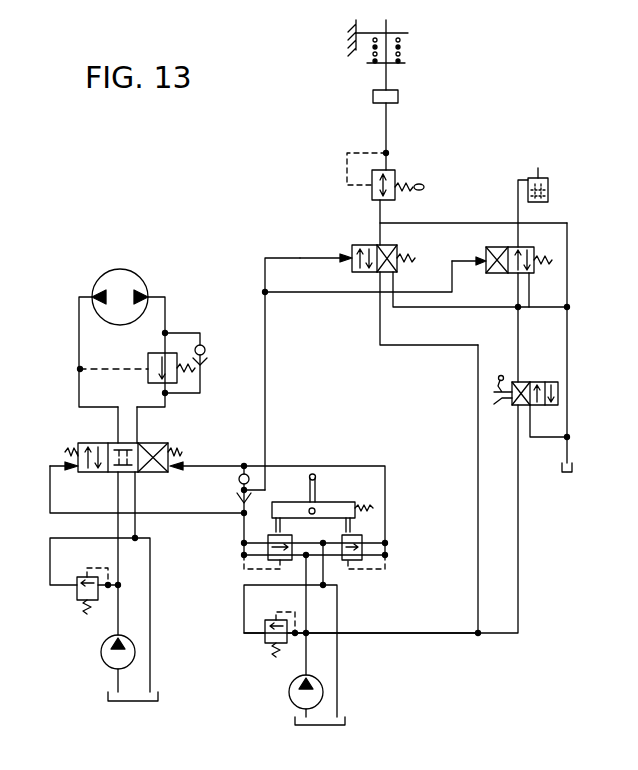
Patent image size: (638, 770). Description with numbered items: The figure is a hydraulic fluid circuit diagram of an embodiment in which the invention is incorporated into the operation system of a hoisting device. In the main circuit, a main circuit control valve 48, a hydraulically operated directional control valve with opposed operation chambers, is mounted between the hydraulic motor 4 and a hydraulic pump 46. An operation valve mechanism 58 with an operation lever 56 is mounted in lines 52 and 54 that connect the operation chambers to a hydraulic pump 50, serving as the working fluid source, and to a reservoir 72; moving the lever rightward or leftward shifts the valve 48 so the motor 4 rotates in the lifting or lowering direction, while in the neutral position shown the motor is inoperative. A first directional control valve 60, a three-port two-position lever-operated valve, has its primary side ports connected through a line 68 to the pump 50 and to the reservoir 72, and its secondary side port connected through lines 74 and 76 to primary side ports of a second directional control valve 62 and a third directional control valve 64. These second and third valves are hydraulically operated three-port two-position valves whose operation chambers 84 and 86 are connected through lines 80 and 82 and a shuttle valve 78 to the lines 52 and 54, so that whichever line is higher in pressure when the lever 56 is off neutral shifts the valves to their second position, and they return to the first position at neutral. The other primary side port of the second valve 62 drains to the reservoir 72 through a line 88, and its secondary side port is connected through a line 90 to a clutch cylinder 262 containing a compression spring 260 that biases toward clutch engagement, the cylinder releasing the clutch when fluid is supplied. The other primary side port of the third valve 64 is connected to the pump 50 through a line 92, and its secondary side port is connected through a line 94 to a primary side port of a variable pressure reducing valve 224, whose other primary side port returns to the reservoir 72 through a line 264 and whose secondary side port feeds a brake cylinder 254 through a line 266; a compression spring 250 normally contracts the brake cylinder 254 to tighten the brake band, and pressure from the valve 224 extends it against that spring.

The hydraulic motor 4 is at (98, 280).
The hydraulic pump 46 is at (101, 652).
The main circuit control valve 48 is at (150, 443).
The hydraulic pump 50 is at (289, 690).
The line 52 is at (337, 466).
The line 54 is at (215, 513).
The operation lever 56 is at (310, 475).
The operation valve mechanism 58 is at (339, 490).
The first directional control valve 60 is at (558, 394).
The second directional control valve 62 is at (528, 247).
The third directional control valve 64 is at (392, 244).
The line 68 is at (518, 585).
The reservoir 72 is at (548, 437).
The line 74 is at (511, 290).
The line 76 is at (428, 307).
The shuttle valve 78 is at (236, 492).
The line 80 is at (295, 292).
The line 82 is at (292, 256).
The operation chamber 84 is at (476, 255).
The operation chamber 86 is at (338, 246).
The line 88 is at (544, 310).
The line 90 is at (517, 200).
The line 92 is at (478, 562).
The line 94 is at (380, 220).
The variable pressure reducing valve 224 is at (390, 168).
The compression spring 250 is at (408, 45).
The brake cylinder 254 is at (398, 97).
The compression spring 260 is at (548, 194).
The clutch cylinder 262 is at (540, 172).
The line 264 is at (567, 260).
The line 266 is at (386, 128).